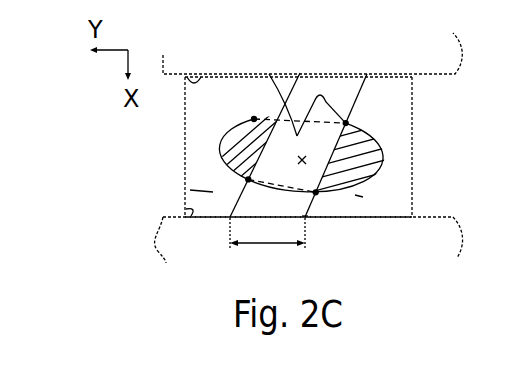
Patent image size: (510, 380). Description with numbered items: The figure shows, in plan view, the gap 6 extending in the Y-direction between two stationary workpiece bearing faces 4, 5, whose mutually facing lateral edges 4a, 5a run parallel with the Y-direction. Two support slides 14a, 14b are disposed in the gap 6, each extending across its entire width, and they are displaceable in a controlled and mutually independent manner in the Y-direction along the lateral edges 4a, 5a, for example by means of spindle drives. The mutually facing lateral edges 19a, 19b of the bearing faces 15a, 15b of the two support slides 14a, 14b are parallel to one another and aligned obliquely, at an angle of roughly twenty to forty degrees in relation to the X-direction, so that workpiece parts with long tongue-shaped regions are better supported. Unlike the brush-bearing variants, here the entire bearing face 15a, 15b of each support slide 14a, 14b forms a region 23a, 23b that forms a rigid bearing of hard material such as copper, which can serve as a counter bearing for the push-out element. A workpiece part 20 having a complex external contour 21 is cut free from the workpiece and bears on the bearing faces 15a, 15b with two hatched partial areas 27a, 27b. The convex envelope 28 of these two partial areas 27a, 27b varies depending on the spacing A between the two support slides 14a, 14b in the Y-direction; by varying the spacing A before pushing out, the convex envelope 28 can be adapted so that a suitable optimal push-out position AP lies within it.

The stationary workpiece bearing face 4 is at (163, 55).
The lateral edge 4a is at (187, 74).
The stationary workpiece bearing face 5 is at (156, 246).
The lateral edge 5a is at (185, 213).
The gap 6 is at (306, 87).
The first support slide 14a is at (178, 137).
The second support slide 14b is at (419, 172).
The bearing face 15a is at (151, 168).
The region forming a rigid bearing 23a is at (213, 192).
The bearing face 15b is at (391, 233).
The region forming a rigid bearing 23b is at (363, 197).
The lateral edge 19a is at (230, 218).
The lateral edge 19b is at (369, 86).
The workpiece part 20 is at (305, 218).
The external contour 21 is at (320, 93).
The partial area 27a is at (243, 128).
The partial area 27b is at (317, 190).
The convex envelope 28 is at (269, 74).
The push-out position AP is at (308, 162).
The spacing A is at (267, 234).